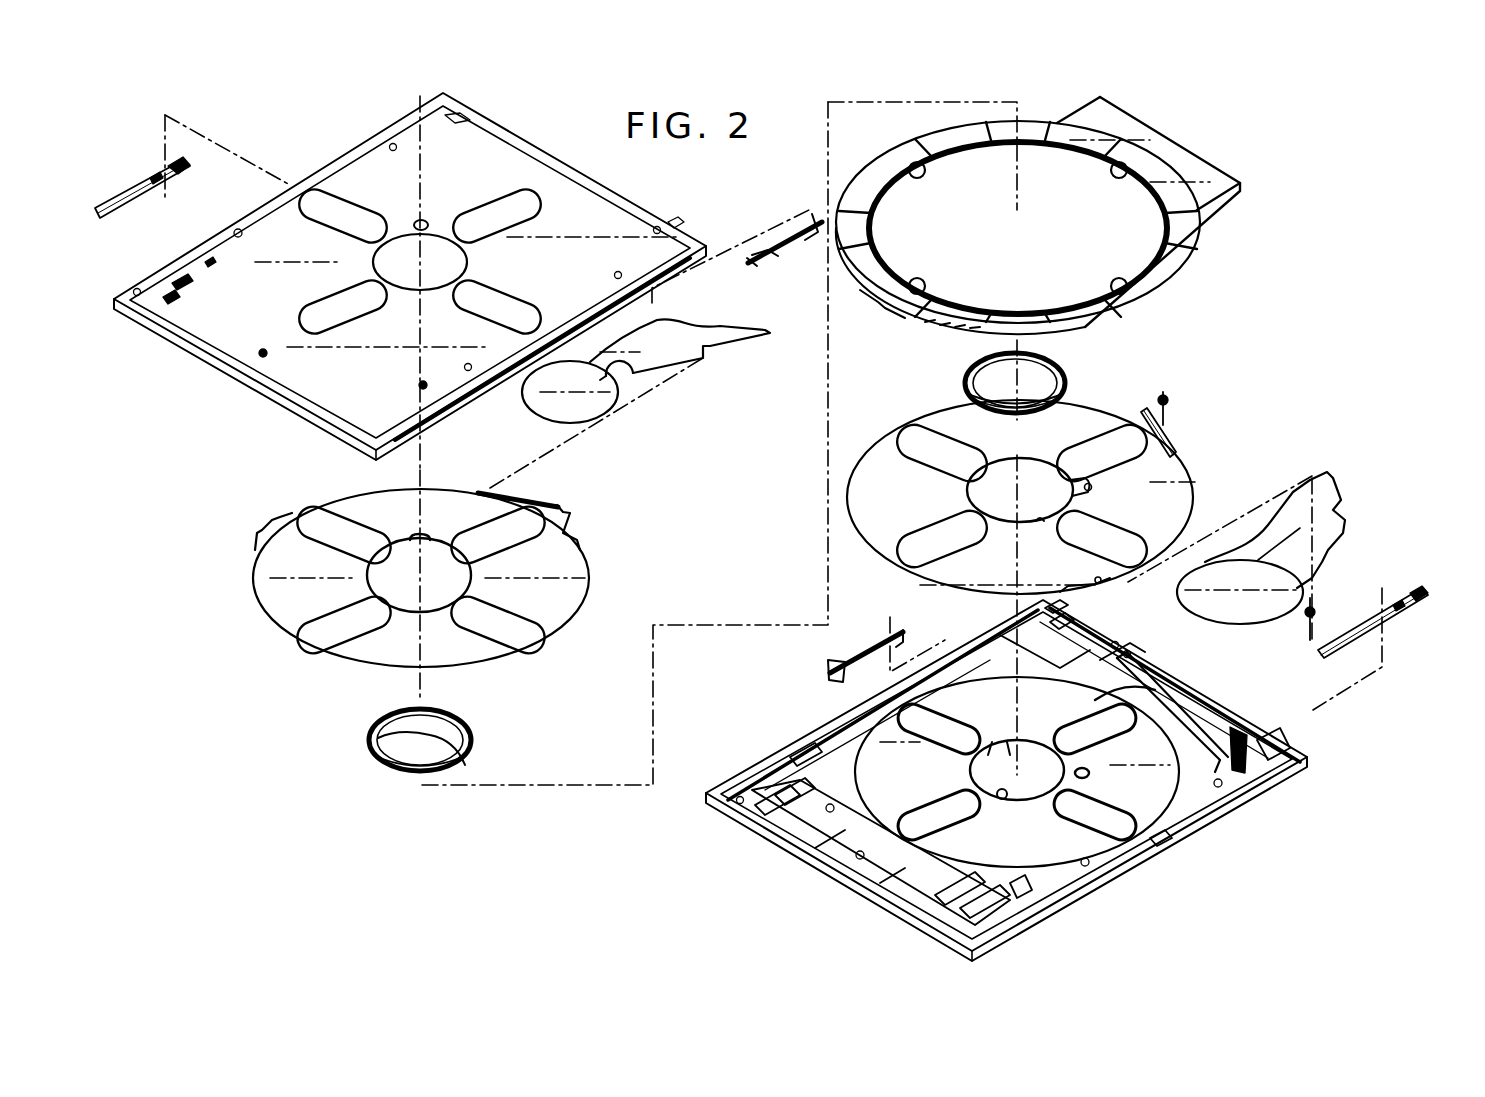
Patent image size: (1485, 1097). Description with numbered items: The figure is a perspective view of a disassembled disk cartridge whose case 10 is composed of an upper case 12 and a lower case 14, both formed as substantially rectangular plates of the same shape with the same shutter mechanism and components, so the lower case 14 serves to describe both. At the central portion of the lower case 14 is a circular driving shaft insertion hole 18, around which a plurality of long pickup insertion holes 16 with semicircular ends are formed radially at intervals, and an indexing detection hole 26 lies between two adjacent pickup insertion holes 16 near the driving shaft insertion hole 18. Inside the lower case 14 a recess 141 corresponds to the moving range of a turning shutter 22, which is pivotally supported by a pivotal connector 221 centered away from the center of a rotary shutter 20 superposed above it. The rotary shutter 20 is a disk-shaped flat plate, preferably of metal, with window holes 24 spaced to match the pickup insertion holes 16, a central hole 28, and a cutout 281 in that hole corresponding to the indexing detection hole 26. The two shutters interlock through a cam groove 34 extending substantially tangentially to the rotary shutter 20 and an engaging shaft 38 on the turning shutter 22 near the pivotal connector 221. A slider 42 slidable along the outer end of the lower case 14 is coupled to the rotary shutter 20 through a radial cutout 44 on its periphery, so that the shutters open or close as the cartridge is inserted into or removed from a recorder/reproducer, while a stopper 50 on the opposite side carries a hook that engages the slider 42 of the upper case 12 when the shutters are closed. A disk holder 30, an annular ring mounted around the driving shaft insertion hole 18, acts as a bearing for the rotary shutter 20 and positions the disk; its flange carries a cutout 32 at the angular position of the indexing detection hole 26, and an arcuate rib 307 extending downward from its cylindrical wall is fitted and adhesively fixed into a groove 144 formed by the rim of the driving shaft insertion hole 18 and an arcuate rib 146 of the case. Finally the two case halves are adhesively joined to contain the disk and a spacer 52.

The case 10 is at (640, 178).
The upper case 12 is at (670, 226).
The lower case 14 is at (1226, 812).
The recess 141 is at (1187, 715).
The groove 144 is at (1007, 742).
The arcuate rib 146 is at (992, 742).
The pickup insertion holes 16 is at (923, 733).
The driving shaft insertion hole 18 is at (1002, 800).
The rotary shutter 20 is at (583, 550).
The turning shutter 22 is at (540, 420).
The pivotal connector 221 is at (1140, 652).
The window holes 24 is at (905, 450).
The indexing detection hole 26 is at (425, 220).
The central hole 28 is at (1040, 523).
The cutout 281 is at (1092, 490).
The disk holder 30 is at (1063, 358).
The arcuate rib 307 is at (377, 723).
The cutout 32 is at (1077, 385).
The cam groove 34 is at (1185, 456).
The engaging shaft 38 is at (1315, 610).
The slider 42 is at (128, 192).
The radial cutout 44 is at (1098, 582).
The stopper 50 is at (806, 245).
The spacer 52 is at (1200, 250).